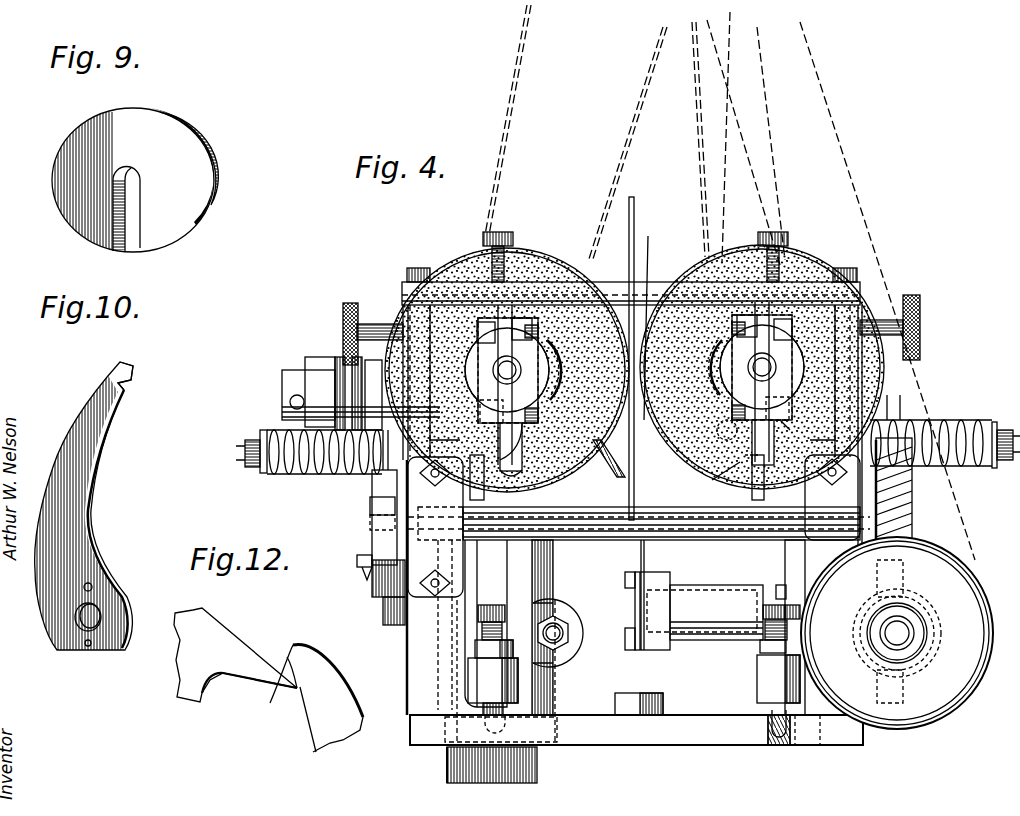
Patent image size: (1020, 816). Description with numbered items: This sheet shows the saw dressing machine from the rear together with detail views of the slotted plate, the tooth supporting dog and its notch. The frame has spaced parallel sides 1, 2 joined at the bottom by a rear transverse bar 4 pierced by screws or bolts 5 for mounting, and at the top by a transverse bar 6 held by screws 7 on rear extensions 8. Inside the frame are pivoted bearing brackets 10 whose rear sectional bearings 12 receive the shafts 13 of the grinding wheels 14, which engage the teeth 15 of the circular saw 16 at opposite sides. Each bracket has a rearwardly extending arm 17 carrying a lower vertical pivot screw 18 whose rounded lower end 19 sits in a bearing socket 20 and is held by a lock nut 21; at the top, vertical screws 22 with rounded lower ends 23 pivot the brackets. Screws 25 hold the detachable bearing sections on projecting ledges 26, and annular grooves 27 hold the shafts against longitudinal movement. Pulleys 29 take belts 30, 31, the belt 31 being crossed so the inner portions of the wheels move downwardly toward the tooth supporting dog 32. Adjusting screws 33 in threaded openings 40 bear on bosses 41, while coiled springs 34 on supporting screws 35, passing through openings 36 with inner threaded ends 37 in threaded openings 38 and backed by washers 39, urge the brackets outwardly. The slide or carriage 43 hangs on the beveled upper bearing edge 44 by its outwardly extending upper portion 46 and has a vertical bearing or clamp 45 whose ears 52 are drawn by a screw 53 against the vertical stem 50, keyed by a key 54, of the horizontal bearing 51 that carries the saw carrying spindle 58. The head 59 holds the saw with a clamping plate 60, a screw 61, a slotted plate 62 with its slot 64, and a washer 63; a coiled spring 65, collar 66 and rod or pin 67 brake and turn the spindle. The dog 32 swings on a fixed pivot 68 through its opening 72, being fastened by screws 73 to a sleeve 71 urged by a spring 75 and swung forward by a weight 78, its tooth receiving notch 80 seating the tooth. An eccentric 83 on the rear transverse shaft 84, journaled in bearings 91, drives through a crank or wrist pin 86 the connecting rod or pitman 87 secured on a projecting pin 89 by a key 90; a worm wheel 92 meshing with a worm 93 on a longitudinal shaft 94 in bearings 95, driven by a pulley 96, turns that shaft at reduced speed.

In FIG. 4, the side 1 is at (866, 730).
In FIG. 4, the side 2 is at (406, 650).
In FIG. 4, the rear transverse bar 4 is at (636, 672).
In FIG. 4, the screws or bolts 5 is at (664, 697).
In FIG. 4, the top transverse bar 6 is at (631, 295).
In FIG. 4, the screws 7 is at (415, 268).
In FIG. 4, the rear extensions 8 is at (629, 381).
In FIG. 4, the bearing brackets 10 is at (635, 627).
In FIG. 4, the rear sectional bearings 12 is at (634, 386).
In FIG. 4, the shafts 13 is at (634, 368).
In FIG. 4, the grinding wheels 14 is at (575, 248).
In FIG. 12, the teeth 15 is at (249, 672).
In FIG. 4, the teeth 15 is at (636, 240).
In FIG. 12, the circular saw 16 is at (175, 690).
In FIG. 4, the circular saw 16 is at (628, 196).
In FIG. 4, the rearwardly extending arms 17 is at (634, 679).
In FIG. 4, the lower vertical pivot screws 18 is at (480, 630).
In FIG. 4, the rounded lower ends 19 is at (505, 722).
In FIG. 4, the bearing sockets 20 is at (790, 727).
In FIG. 4, the lock nuts 21 is at (478, 655).
In FIG. 4, the vertical screws 22 is at (500, 232).
In FIG. 4, the rounded lower ends 23 is at (699, 356).
In FIG. 4, the screws 25 is at (760, 412).
In FIG. 4, the projecting ledges 26 is at (522, 460).
In FIG. 4, the annular grooves 27 is at (636, 368).
In FIG. 4, the pulleys 29 is at (552, 352).
In FIG. 4, the belt 30 is at (514, 108).
In FIG. 4, the belt 31 is at (712, 162).
In FIG. 10, the tooth supporting dog 32 is at (95, 510).
In FIG. 12, the tooth supporting dog 32 is at (316, 698).
In FIG. 4, the tooth supporting dog 32 is at (644, 553).
In FIG. 4, the adjusting screws 33 is at (372, 324).
In FIG. 4, the coiled springs 34 is at (296, 477).
In FIG. 4, the supporting screws 35 is at (247, 468).
In FIG. 4, the openings 36 is at (630, 417).
In FIG. 4, the inner threaded ends 37 is at (626, 477).
In FIG. 4, the threaded openings 38 is at (610, 460).
In FIG. 4, the washers 39 is at (258, 438).
In FIG. 4, the threaded openings 40 is at (631, 381).
In FIG. 4, the bosses 41 is at (825, 282).
In FIG. 4, the slide or carriage 43 is at (435, 527).
In FIG. 4, the beveled upper bearing edge 44 is at (434, 625).
In FIG. 4, the vertical bearing or clamp 45 is at (557, 627).
In FIG. 4, the outwardly extending upper portion 46 is at (372, 502).
In FIG. 4, the vertical stem 50 is at (540, 765).
In FIG. 4, the horizontal bearing 51 is at (318, 362).
In FIG. 4, the ears 52 is at (566, 662).
In FIG. 4, the screw 53 is at (565, 640).
In FIG. 4, the key 54 is at (447, 768).
In FIG. 4, the saw carrying spindle 58 is at (282, 376).
In FIG. 4, the head 59 is at (605, 478).
In FIG. 4, the clamping plate 60 is at (700, 520).
In FIG. 4, the screw 61 is at (713, 431).
In FIG. 9, the slotted plate 62 is at (135, 180).
In FIG. 4, the washer 63 is at (736, 462).
In FIG. 9, the slot 64 is at (128, 238).
In FIG. 4, the coiled spring 65 is at (345, 330).
In FIG. 4, the collar 66 is at (340, 375).
In FIG. 4, the rod or pin 67 is at (290, 400).
In FIG. 4, the fixed pivot 68 is at (635, 612).
In FIG. 4, the sleeve 71 is at (716, 612).
In FIG. 10, the opening 72 is at (80, 628).
In FIG. 4, the screws 73 is at (626, 576).
In FIG. 4, the spring 75 is at (776, 590).
In FIG. 4, the weight 78 is at (712, 586).
In FIG. 10, the tooth receiving notch 80 is at (133, 368).
In FIG. 12, the tooth receiving notch 80 is at (300, 687).
In FIG. 4, the eccentric 83 is at (390, 628).
In FIG. 4, the rear transverse shaft 84 is at (661, 523).
In FIG. 4, the crank or wrist pin 86 is at (372, 522).
In FIG. 4, the connecting rod or pitman 87 is at (372, 598).
In FIG. 4, the projecting pin 89 is at (357, 562).
In FIG. 4, the key 90 is at (365, 577).
In FIG. 4, the bearings 91 is at (455, 520).
In FIG. 4, the worm wheel 92 is at (912, 502).
In FIG. 4, the worm 93 is at (928, 636).
In FIG. 4, the longitudinal shaft 94 is at (897, 633).
In FIG. 4, the bearings 95 is at (905, 700).
In FIG. 4, the pulley 96 is at (972, 688).